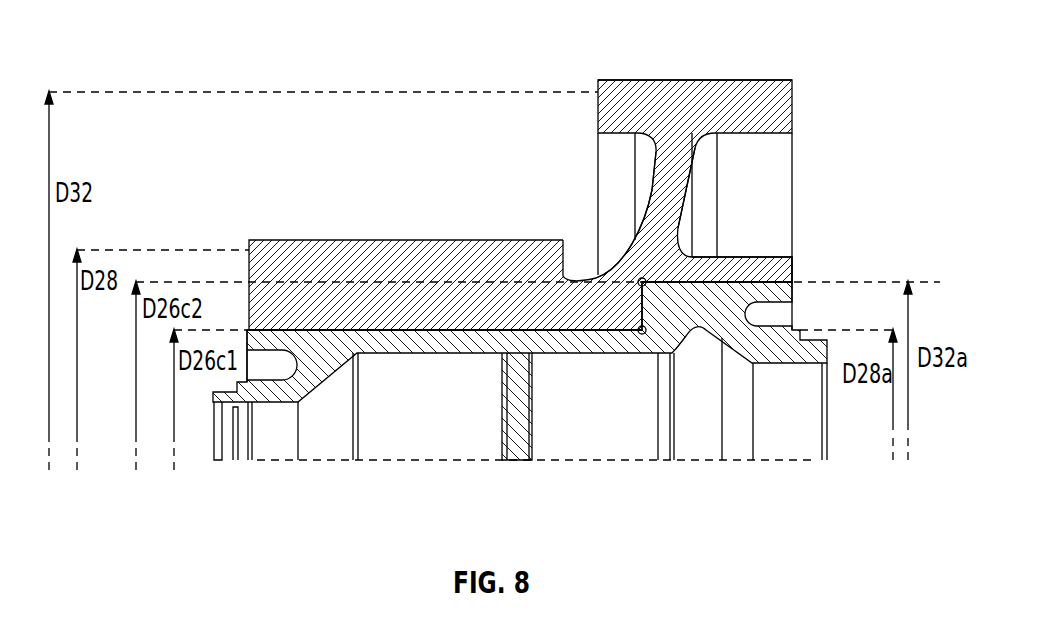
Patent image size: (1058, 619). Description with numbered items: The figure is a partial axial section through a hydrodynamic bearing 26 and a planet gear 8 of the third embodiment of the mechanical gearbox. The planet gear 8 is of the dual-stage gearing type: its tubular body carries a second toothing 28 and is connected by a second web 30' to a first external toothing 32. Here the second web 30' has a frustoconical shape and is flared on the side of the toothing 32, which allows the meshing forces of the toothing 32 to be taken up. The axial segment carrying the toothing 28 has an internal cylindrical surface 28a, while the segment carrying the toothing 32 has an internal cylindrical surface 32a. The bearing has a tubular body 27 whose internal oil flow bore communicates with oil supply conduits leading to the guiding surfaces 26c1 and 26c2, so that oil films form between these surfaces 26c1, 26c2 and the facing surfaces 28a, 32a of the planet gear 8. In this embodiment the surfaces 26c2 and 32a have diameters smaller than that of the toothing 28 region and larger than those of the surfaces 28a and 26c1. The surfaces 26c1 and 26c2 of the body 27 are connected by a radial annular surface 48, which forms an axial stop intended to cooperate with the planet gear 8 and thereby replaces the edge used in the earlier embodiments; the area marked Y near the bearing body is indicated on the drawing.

The planet gear 8 is at (589, 68).
The hydrodynamic bearing 26 is at (583, 403).
The body 27 is at (841, 470).
The surface 26c1 is at (465, 325).
The surface 26c2 is at (778, 278).
The second toothing 28 is at (332, 240).
The internal cylindrical surface 28a is at (403, 332).
The second web 30' is at (742, 213).
The first external toothing 32 is at (660, 80).
The internal cylindrical surface 32a is at (748, 300).
The radial annular surface 48 is at (642, 306).
The detail region Y is at (812, 459).